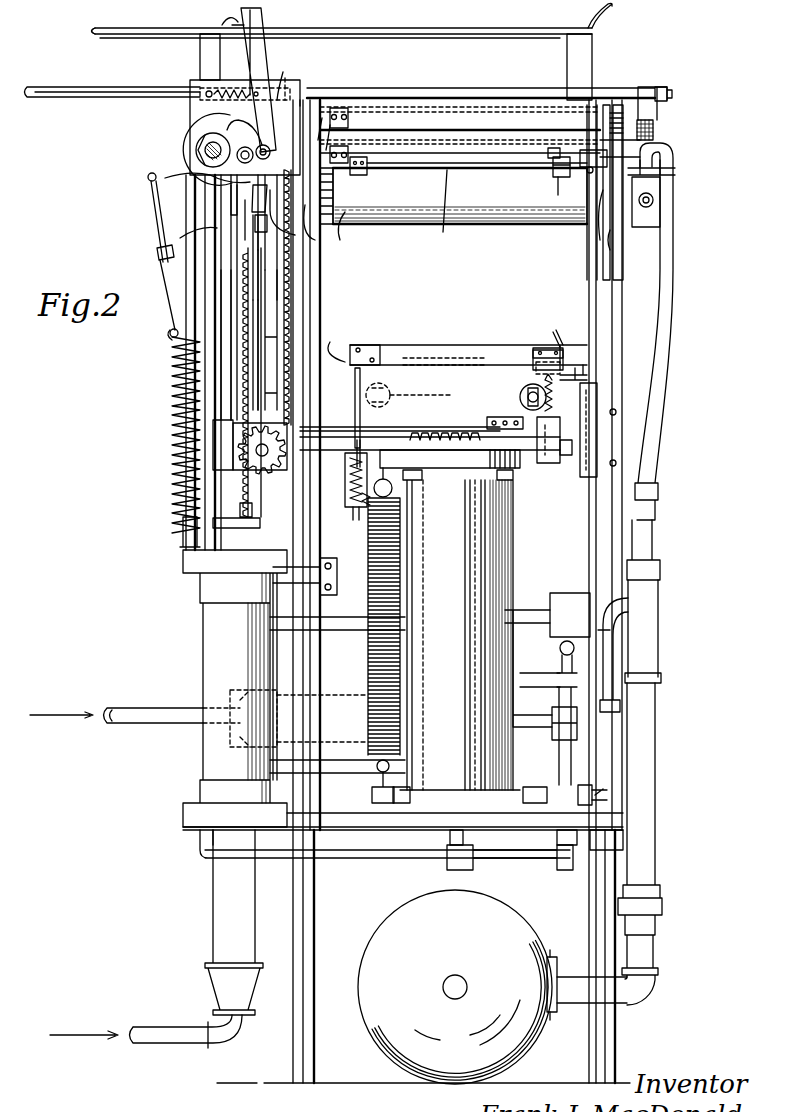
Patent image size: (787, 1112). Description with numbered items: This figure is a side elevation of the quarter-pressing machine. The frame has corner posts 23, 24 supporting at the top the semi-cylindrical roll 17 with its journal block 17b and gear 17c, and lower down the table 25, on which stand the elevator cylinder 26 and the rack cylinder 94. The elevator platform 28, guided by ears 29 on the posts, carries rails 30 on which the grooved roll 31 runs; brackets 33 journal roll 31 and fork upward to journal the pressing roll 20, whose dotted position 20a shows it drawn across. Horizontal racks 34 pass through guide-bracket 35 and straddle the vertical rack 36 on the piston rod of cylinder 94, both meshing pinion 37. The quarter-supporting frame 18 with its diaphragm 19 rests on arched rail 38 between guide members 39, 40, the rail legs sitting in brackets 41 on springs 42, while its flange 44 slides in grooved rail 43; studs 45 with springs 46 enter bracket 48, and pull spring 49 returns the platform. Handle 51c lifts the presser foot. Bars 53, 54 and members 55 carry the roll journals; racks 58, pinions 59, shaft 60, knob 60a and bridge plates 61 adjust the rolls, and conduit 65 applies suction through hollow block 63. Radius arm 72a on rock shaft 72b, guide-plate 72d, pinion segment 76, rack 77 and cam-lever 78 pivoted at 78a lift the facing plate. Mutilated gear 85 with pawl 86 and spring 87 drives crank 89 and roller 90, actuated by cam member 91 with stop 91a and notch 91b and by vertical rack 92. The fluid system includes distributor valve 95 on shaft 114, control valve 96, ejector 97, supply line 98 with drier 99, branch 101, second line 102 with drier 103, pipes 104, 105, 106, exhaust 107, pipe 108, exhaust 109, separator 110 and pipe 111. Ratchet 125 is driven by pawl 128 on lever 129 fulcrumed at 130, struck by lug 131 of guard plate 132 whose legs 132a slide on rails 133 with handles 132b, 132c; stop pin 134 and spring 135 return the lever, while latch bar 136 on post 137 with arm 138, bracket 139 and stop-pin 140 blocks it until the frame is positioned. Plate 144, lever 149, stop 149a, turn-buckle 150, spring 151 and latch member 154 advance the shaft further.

The semi-cylindrical roll 17 is at (478, 205).
The journal block 17b is at (612, 240).
The gear 17c is at (362, 157).
The vertically movable frame 18 is at (468, 334).
The flexible sheet or diaphragm 19 is at (448, 358).
The roll 20 is at (528, 385).
The dotted-line position of roll 20 20a is at (424, 387).
The corner post 23 is at (300, 285).
The corner post 24 is at (615, 258).
The horizontal plate or table 25 is at (340, 825).
The vertical fluid pressure cylinder 26 is at (500, 550).
The elevator platform 28 is at (458, 468).
The perforate ear 29 is at (357, 465).
The medially-flanged run-way or rail 30 is at (405, 430).
The roll 31 is at (522, 417).
The bracket 33 is at (528, 395).
The horizontal rack 34 is at (445, 433).
The guide-bracket 35 is at (220, 455).
The vertical rack 36 is at (243, 388).
The pinion 37 is at (266, 470).
The arched rail 38 is at (355, 400).
The guide member 39 is at (345, 345).
The guide member 40 is at (382, 385).
The guide bracket 41 is at (345, 495).
The helical spring 42 is at (366, 505).
The grooved rail 43 is at (565, 463).
The downwardly projecting flange 44 is at (580, 380).
The stud or dowel 45 is at (597, 418).
The helical spring 46 is at (555, 395).
The ear or bracket 48 is at (540, 348).
The pull spring 49 is at (368, 660).
The handle 51c is at (557, 330).
The bar 53 is at (348, 112).
The bar 54 is at (640, 140).
The member 55 is at (660, 173).
The rack 58 is at (335, 130).
The pinion 59 is at (340, 140).
The shaft 60 is at (480, 135).
The hand knob 60a is at (653, 125).
The bridge plate 61 is at (605, 105).
The hollow block 63 is at (650, 216).
The fluid conduit 65 is at (675, 165).
The variable-length radius arm 72a is at (380, 172).
The rock shaft 72b is at (440, 212).
The guide-plate 72d is at (515, 110).
The pinion segment 76 is at (562, 160).
The rack 77 is at (590, 175).
The cam-lever 78 is at (597, 550).
The pivot 78a is at (603, 790).
The mutilated gear 85 is at (318, 238).
The pawl 86 is at (245, 210).
The spring 87 is at (253, 200).
The crank 89 is at (295, 235).
The cam roller 90 is at (255, 225).
The cam member 91 is at (253, 345).
The stop 91a is at (170, 336).
The notch 91b is at (265, 322).
The vertical rack 92 is at (280, 312).
The cylinder 94 is at (220, 662).
The distributor valve 95 is at (200, 150).
The fluid-pressure-actuated control valve 96 is at (545, 680).
The ejector 97 is at (660, 635).
The incoming fluid-pressure supply-line 98 is at (155, 1025).
The air drier 99 is at (230, 890).
The branch 101 is at (518, 623).
The second incoming fluid-pressure supply-line 102 is at (133, 725).
The air drier 103 is at (281, 718).
The pipe 104 is at (213, 282).
The pipe 105 is at (220, 298).
The pipe 106 is at (233, 310).
The exhaust 107 is at (232, 222).
The pipe 108 is at (612, 688).
The exhaust 109 is at (655, 800).
The muffler and oil separator 110 is at (510, 935).
The pipe 111 is at (535, 865).
The axial shaft 114 is at (205, 160).
The ratchet 125 is at (237, 155).
The pawl 128 is at (238, 128).
The lever 129 is at (262, 15).
The fulcrum 130 is at (258, 148).
The lug 131 is at (236, 20).
The cover or guard plate 132 is at (490, 32).
The leg 132a is at (622, 47).
The handle 132b is at (100, 30).
The handle 132c is at (620, 24).
The rail 133 is at (45, 87).
The stop pin 134 is at (292, 68).
The pull spring 135 is at (235, 88).
The horizontal latch bar 136 is at (460, 88).
The vertical pivot-post 137 is at (590, 307).
The radius arm 138 is at (535, 352).
The bracket 139 is at (330, 125).
The stop-pin 140 is at (320, 118).
The plate 144 is at (195, 140).
The lever 149 is at (165, 178).
The stop 149a is at (366, 235).
The turn-buckle 150 is at (160, 252).
The spring 151 is at (175, 365).
The latch member 154 is at (298, 76).